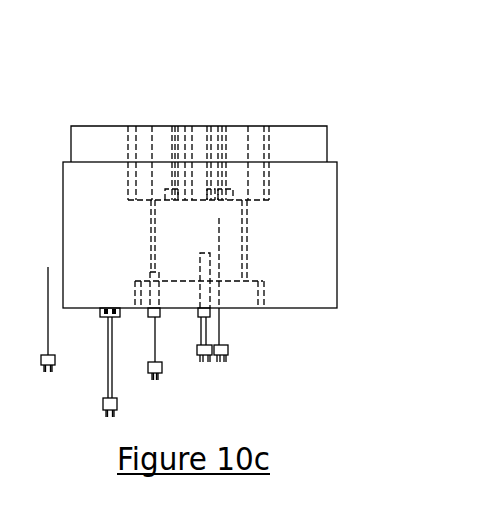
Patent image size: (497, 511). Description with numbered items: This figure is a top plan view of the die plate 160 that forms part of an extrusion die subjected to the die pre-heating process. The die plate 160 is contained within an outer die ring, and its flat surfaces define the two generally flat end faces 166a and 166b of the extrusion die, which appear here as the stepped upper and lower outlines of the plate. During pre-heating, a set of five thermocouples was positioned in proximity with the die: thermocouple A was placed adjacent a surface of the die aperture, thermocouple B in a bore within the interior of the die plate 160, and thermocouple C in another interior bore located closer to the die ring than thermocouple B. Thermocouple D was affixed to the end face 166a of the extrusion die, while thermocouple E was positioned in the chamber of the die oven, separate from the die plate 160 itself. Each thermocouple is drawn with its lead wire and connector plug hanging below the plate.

The die plate 160 is at (231, 223).
The end face 166b is at (299, 114).
The end face 166a is at (299, 320).
The thermocouple A is at (228, 349).
The thermocouple B is at (202, 349).
The thermocouple C is at (155, 358).
The thermocouple D is at (106, 372).
The thermocouple E is at (46, 336).